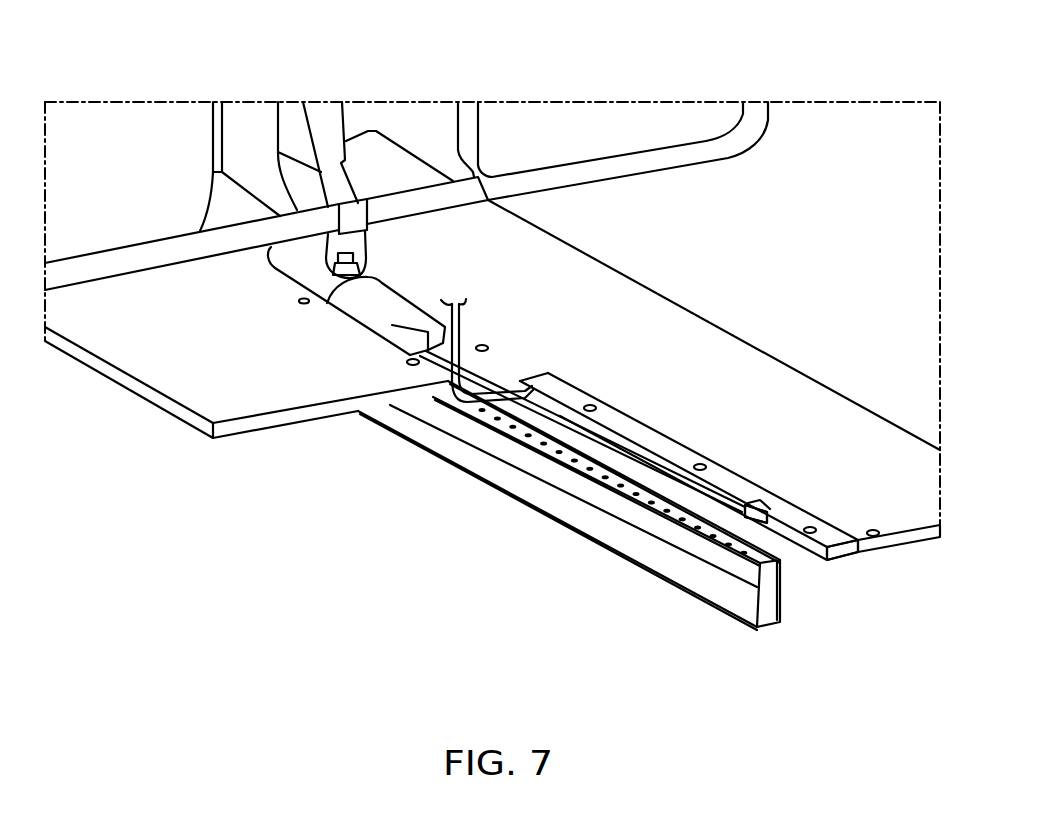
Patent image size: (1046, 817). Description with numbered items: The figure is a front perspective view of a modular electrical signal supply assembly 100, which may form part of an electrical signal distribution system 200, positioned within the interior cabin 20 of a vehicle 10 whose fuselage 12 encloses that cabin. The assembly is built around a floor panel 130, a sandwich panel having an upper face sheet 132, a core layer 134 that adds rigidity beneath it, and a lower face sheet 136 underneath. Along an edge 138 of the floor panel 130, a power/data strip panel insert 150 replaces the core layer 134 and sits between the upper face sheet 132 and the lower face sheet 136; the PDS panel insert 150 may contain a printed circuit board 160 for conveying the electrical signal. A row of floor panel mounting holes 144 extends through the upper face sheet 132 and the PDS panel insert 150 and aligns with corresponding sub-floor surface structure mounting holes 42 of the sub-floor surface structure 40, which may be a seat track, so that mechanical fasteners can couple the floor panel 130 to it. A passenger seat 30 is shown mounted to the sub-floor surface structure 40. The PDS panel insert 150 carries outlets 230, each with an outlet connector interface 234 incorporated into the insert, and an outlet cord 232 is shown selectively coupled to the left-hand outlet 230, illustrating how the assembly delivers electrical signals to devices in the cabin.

The vehicle 10 is at (606, 32).
The fuselage 12 is at (613, 58).
The interior cabin 20 is at (628, 83).
The passenger seat 30 is at (603, 186).
The modular electrical signal supply assembly 100 is at (721, 243).
The electrical signal distribution system 200 is at (728, 197).
The floor panel 130 is at (726, 330).
The upper face sheet 132 is at (807, 400).
The core layer 134 is at (915, 538).
The lower face sheet 136 is at (903, 549).
The edge 138 is at (627, 440).
The floor panel mounting holes 144 is at (588, 403).
The outlet 230 is at (470, 329).
The outlet cord 232 is at (486, 348).
The outlet connector interface 234 is at (768, 521).
The sub-floor surface structure 40 is at (767, 631).
The sub-floor surface structure mounting holes 42 is at (713, 552).
The PDS panel insert 150 is at (842, 565).
The printed circuit board 160 is at (852, 548).